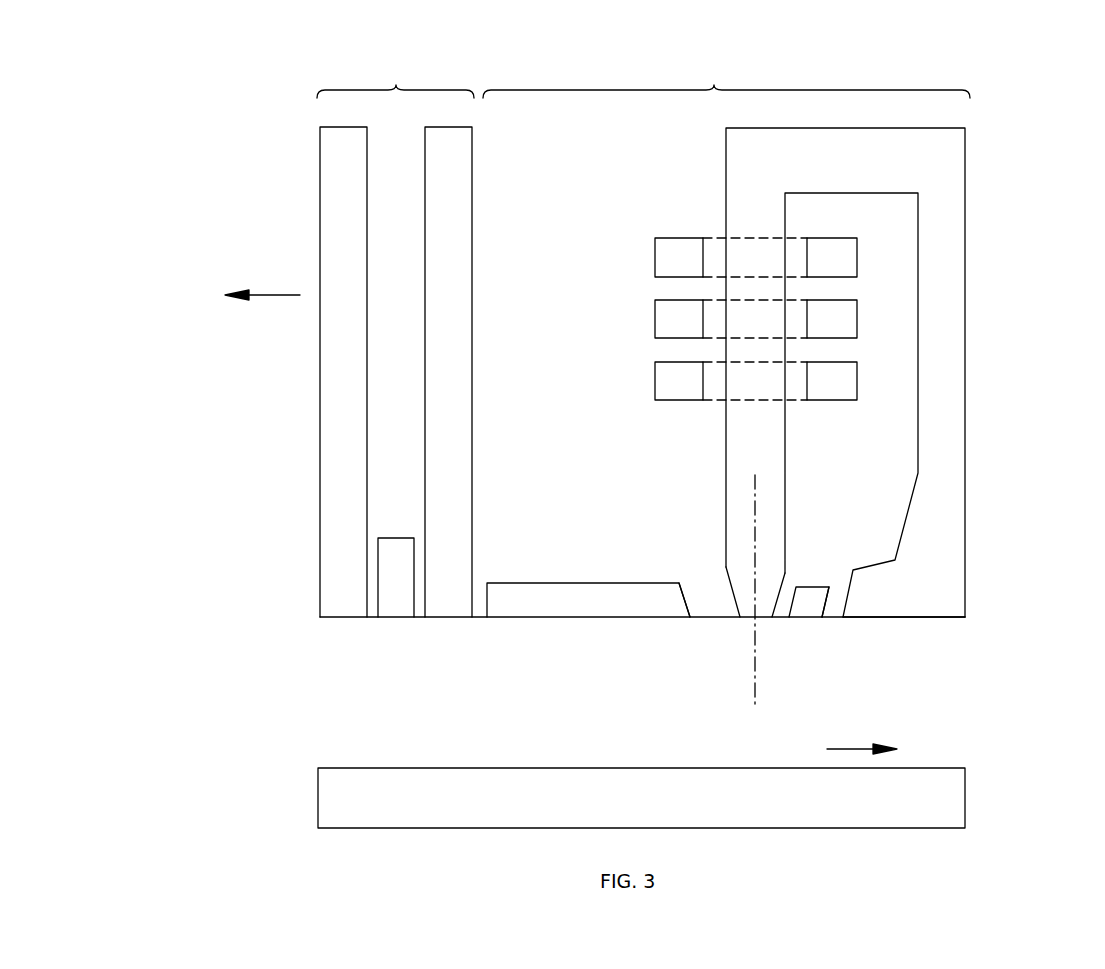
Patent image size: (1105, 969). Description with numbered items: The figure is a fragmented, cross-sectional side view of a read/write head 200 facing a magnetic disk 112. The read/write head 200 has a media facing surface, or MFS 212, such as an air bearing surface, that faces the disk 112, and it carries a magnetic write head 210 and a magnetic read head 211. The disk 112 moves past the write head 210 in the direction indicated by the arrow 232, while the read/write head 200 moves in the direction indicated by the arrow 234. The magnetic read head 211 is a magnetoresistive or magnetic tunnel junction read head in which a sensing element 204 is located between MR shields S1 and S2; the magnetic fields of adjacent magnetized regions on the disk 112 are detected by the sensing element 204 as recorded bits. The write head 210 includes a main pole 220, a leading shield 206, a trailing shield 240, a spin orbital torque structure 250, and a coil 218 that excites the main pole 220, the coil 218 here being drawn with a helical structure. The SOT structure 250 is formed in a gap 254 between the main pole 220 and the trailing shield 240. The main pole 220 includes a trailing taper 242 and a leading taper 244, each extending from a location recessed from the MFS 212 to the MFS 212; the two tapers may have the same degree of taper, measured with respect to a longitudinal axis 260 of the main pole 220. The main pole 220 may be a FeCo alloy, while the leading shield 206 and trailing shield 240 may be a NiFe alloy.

The read/write head 200 is at (174, 76).
The magnetic read head 211 is at (362, 370).
The magnetic write head 210 is at (768, 379).
The MR shield S1 is at (335, 618).
The MR shield S2 is at (432, 618).
The MR sensing element 204 is at (388, 618).
The leading shield 206 is at (523, 618).
The coil 218 is at (680, 402).
The main pole 220 is at (770, 446).
The trailing shield 240 is at (948, 552).
The trailing taper 242 is at (785, 575).
The leading taper 244 is at (726, 575).
The spin orbital torque (SOT) structure 250 is at (806, 607).
The gap 254 is at (715, 606).
The longitudinal axis 260 is at (755, 690).
The MFS 212 is at (947, 619).
The arrow 232 is at (858, 749).
The arrow 234 is at (280, 294).
The magnetic disk 112 is at (955, 800).